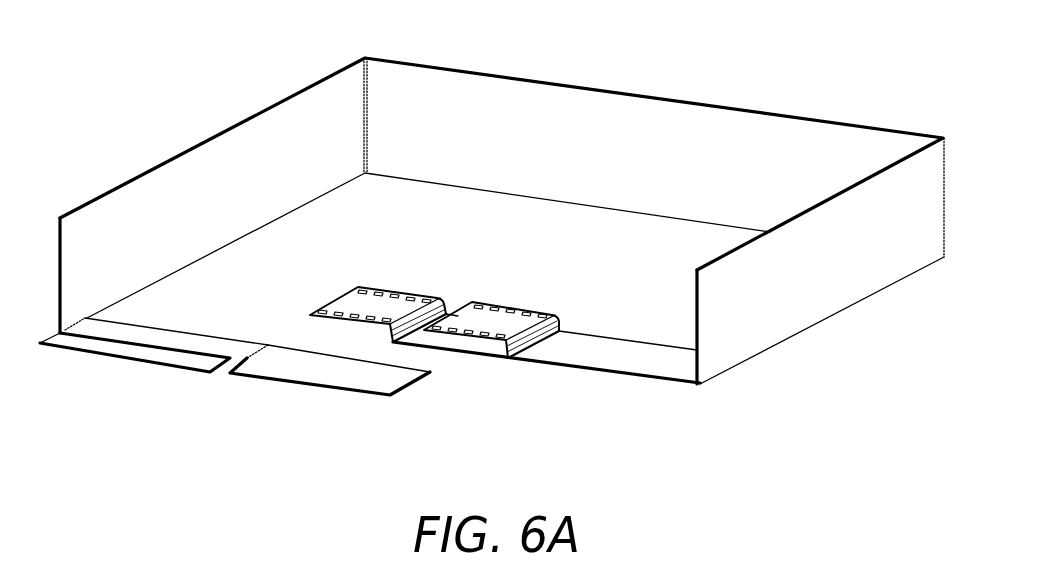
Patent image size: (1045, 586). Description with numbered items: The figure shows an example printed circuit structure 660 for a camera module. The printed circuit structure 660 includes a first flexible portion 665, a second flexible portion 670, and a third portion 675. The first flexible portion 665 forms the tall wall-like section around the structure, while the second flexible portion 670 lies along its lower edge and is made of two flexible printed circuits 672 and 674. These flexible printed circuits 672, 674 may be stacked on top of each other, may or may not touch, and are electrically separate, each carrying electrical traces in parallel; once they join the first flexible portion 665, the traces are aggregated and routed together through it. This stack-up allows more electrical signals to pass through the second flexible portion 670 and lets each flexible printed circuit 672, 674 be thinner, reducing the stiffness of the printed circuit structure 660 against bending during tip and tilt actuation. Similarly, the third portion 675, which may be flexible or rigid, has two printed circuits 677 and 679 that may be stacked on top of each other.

The printed circuit structure 660 is at (268, 79).
The first flexible portion 665 is at (678, 80).
The second flexible portion 670 is at (663, 313).
The flexible printed circuit 672 is at (345, 298).
The flexible printed circuit 674 is at (497, 327).
The third portion 675 is at (393, 442).
The printed circuit 677 is at (121, 348).
The printed circuit 679 is at (310, 377).